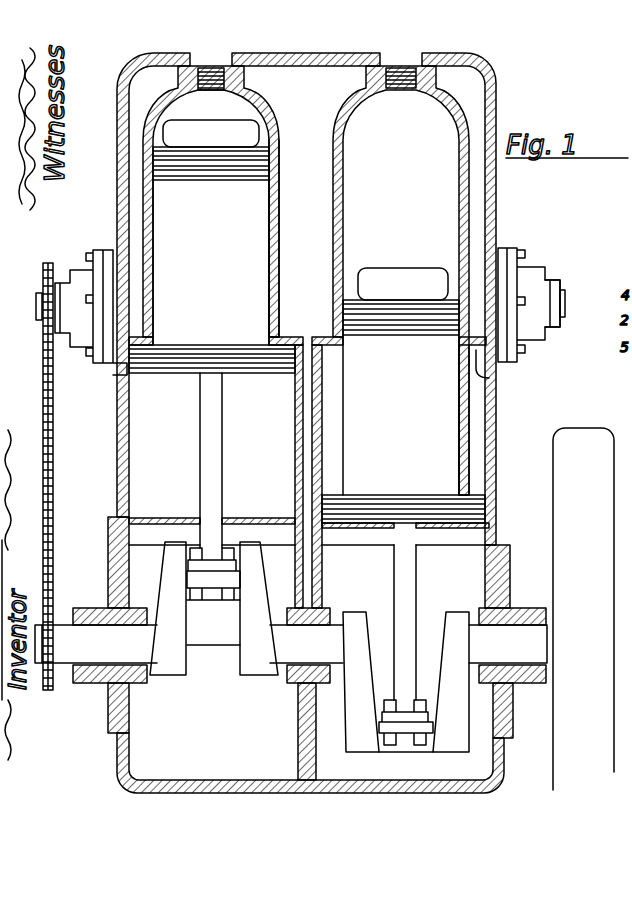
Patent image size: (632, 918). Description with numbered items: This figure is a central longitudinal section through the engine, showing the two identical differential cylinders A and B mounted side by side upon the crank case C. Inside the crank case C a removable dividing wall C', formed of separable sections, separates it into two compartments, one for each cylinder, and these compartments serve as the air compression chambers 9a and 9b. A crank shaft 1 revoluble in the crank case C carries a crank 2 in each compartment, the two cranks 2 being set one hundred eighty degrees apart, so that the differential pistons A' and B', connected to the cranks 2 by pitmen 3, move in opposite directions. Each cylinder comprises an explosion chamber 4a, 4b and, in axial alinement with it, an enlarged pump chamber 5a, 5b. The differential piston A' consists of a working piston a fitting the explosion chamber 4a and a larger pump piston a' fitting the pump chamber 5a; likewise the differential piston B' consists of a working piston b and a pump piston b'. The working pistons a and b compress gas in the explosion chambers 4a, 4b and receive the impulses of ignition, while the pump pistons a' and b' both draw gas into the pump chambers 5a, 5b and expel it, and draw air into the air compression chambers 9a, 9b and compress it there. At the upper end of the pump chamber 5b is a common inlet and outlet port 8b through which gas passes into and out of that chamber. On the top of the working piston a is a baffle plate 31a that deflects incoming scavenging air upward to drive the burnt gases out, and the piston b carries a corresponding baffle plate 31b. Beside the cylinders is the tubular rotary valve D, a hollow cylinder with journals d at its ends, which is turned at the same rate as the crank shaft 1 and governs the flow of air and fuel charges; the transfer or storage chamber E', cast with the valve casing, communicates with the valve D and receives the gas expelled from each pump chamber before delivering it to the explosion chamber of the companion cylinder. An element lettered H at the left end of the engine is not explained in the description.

The differential cylinder A is at (194, 205).
The differential piston A' is at (292, 238).
The working piston a is at (224, 246).
The pump piston a' is at (212, 375).
The differential cylinder B is at (422, 280).
The differential piston B' is at (504, 420).
The working piston b is at (431, 397).
The pump piston b' is at (423, 506).
The crank case C is at (309, 702).
The removable dividing wall C' is at (292, 562).
The tubular rotary valve D is at (565, 280).
The journals d is at (563, 310).
The transfer or storage chamber E' is at (529, 284).
The pump rod H is at (57, 463).
The crank shaft 1 is at (100, 650).
The crank 2 is at (256, 600).
The pitmen 3 is at (222, 467).
The explosion chamber 4a is at (176, 108).
The explosion chamber 4b is at (438, 197).
The pump chamber 5a is at (150, 492).
The pump chamber 5b is at (468, 477).
The common inlet and outlet port 8b is at (493, 377).
The air compression chamber 9a is at (148, 745).
The air compression chamber 9b is at (463, 763).
The baffle plate 31a is at (190, 136).
The piston cap 31b is at (385, 283).